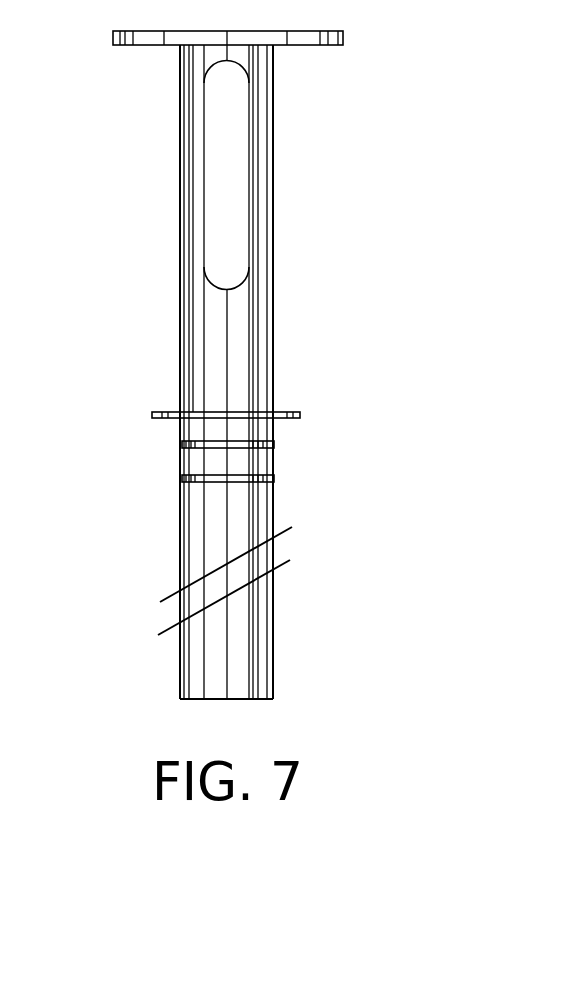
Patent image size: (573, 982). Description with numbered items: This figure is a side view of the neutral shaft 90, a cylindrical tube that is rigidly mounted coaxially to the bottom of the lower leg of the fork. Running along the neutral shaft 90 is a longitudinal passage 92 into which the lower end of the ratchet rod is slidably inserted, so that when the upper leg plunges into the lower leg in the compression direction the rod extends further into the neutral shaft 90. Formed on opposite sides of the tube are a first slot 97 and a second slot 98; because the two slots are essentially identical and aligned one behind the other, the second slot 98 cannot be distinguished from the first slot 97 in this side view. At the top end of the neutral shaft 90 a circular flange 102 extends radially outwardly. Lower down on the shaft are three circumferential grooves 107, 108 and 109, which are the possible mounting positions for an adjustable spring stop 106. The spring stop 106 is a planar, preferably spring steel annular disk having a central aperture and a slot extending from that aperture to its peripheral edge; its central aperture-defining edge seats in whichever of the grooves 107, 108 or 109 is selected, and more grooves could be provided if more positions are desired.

The neutral shaft 90 is at (275, 380).
The longitudinal passage 92 is at (235, 265).
The first slot 97 is at (250, 208).
The second slot 98 is at (250, 155).
The circular flange 102 is at (119, 37).
The adjustable spring stop 106 is at (302, 415).
The circumferential groove 107 is at (182, 478).
The circumferential groove 108 is at (182, 445).
The circumferential groove 109 is at (177, 420).